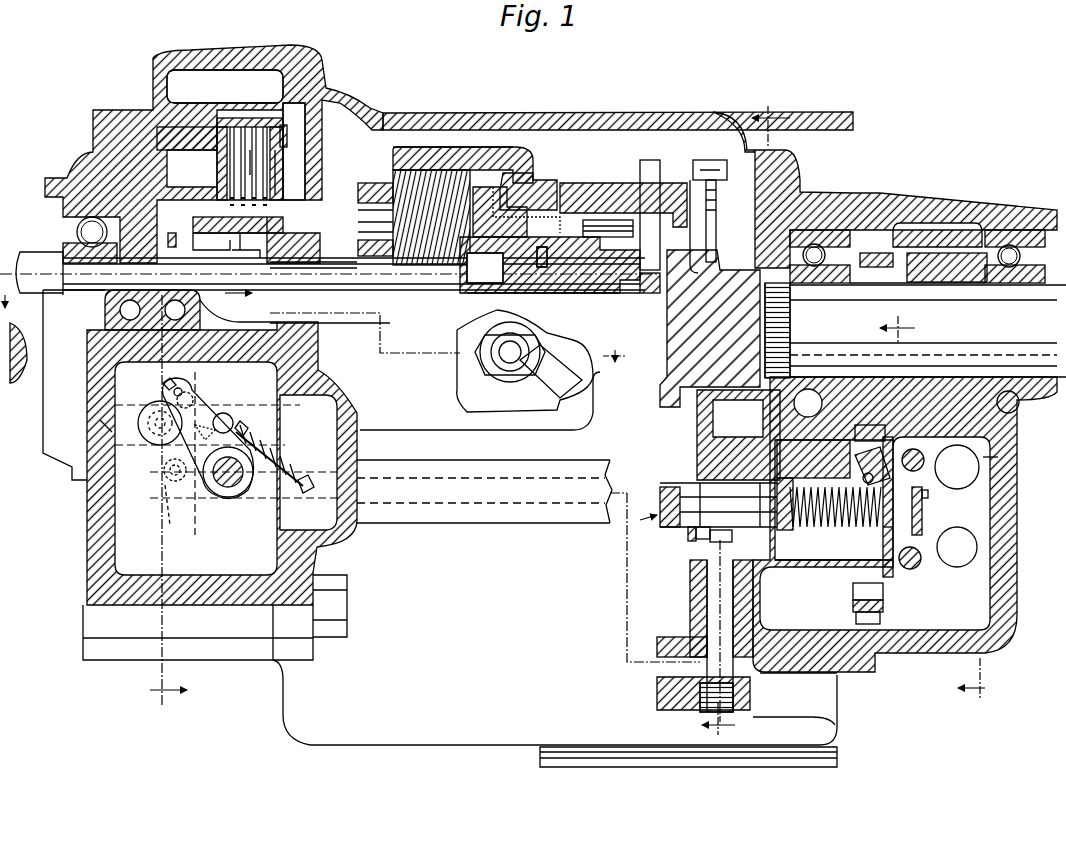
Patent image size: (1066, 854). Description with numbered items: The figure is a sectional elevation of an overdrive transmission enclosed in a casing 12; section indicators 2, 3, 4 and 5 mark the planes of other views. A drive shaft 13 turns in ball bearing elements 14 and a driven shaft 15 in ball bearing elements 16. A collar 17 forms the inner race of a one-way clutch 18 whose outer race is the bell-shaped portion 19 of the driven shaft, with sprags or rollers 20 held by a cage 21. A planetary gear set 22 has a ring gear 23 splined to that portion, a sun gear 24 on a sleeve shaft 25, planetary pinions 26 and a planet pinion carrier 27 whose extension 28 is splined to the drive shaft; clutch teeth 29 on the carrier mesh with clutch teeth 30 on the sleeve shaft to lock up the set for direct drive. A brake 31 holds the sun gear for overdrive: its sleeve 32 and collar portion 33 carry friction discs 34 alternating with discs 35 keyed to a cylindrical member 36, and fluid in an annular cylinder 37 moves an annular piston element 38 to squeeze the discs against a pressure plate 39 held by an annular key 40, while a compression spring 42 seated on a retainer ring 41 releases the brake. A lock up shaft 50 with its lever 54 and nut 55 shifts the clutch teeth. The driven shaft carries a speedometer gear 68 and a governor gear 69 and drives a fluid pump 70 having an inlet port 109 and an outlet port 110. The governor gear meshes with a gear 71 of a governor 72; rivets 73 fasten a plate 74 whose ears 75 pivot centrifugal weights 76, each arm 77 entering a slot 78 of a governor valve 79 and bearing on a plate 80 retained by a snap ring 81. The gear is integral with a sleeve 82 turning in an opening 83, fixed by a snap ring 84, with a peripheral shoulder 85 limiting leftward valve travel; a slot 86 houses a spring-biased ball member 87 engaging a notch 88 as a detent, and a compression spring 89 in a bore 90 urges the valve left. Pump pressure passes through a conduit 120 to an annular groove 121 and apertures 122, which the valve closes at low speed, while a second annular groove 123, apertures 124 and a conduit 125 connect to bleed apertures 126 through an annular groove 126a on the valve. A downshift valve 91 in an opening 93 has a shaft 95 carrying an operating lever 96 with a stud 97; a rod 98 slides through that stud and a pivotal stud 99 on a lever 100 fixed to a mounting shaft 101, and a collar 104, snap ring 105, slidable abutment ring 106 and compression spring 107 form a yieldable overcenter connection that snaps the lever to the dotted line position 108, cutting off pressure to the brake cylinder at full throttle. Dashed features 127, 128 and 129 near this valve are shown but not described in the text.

The section line 2- 2 is at (939, 508).
The section line 3- 3 is at (207, 493).
The section line 4- 4 is at (718, 750).
The section line 5- 5 is at (313, 329).
The casing 12 is at (505, 120).
The drive shaft 13 is at (30, 255).
The ball bearing elements 14 is at (80, 228).
The driven shaft 15 is at (1048, 313).
The ball bearing elements 16 is at (1010, 242).
The collar 17 is at (625, 258).
The one-way clutch 18 is at (610, 205).
The bell-shaped portion 19 is at (590, 183).
The sprags or rollers 20 is at (622, 224).
The cage 21 is at (560, 222).
The planetary gear set 22 is at (422, 137).
The ring gear 23 is at (400, 160).
The sun gear 24 is at (496, 275).
The sleeve shaft 25 is at (375, 282).
The planetary pinions 26 is at (393, 177).
The planet pinion carrier 27 is at (362, 185).
The shaft-like extension 28 is at (535, 247).
The clutch teeth 29 is at (380, 280).
The clutch teeth 30 is at (345, 275).
The brake 31 is at (236, 98).
The sleeve 32 is at (280, 212).
The collar portion 33 is at (300, 270).
The friction discs 34 is at (250, 160).
The discs 35 is at (255, 120).
The cylindrical member 36 is at (303, 117).
The annular cylinder 37 is at (195, 125).
The annular piston element 38 is at (155, 140).
The pressure plate 39 is at (275, 168).
The annular key 40 is at (290, 135).
The retainer ring 41 is at (268, 232).
The compression spring 42 is at (172, 236).
The lock up shaft 50 is at (500, 352).
The lever 54 is at (575, 390).
The nut 55 is at (490, 365).
The speedometer gear 68 is at (950, 252).
The governor gear 69 is at (890, 255).
The fluid pump 70 is at (725, 358).
The gear 71 is at (880, 620).
The governor 72 is at (1000, 514).
The rivets 73 is at (883, 592).
The plate 74 is at (883, 606).
The ears 75 is at (913, 449).
The centrifugal weights 76 is at (985, 470).
The arm 77 is at (924, 518).
The slot 78 is at (960, 482).
The governor valve 79 is at (640, 520).
The plate 80 is at (928, 500).
The snap ring 81 is at (957, 547).
The sleeve 82 is at (800, 555).
The opening 83 is at (830, 530).
The snap ring 84 is at (700, 540).
The peripheral shoulder 85 is at (790, 530).
The slot 86 is at (870, 431).
The spring-biased ball member 87 is at (860, 466).
The notch 88 is at (915, 565).
The compression spring 89 is at (850, 530).
The bore 90 is at (843, 535).
The downshift valve 91 is at (148, 450).
The opening 93 is at (165, 475).
The shaft 95 is at (147, 426).
The operating lever 96 is at (208, 438).
The stud 97 is at (228, 415).
The rod 98 is at (165, 383).
The pivotal stud 99 is at (195, 396).
The lever 100 is at (228, 497).
The mounting shaft 101 is at (238, 485).
The collar 104 is at (310, 478).
The snap ring 105 is at (172, 393).
The slidable abutment ring 106 is at (232, 428).
The compression spring 107 is at (290, 465).
The dotted line position 108 is at (163, 490).
The inlet port 109 is at (770, 235).
The outlet port 110 is at (760, 423).
The conduit 120 is at (808, 403).
The annular groove 121 is at (760, 470).
The apertures 122 is at (718, 505).
The second annular groove 123 is at (712, 560).
The apertures 124 is at (728, 505).
The conduit 125 is at (700, 608).
The bleed apertures 126 is at (688, 535).
The annular groove 126a is at (662, 496).
The passage 127 is at (265, 412).
The passage 128 is at (190, 368).
The passage 129 is at (105, 415).